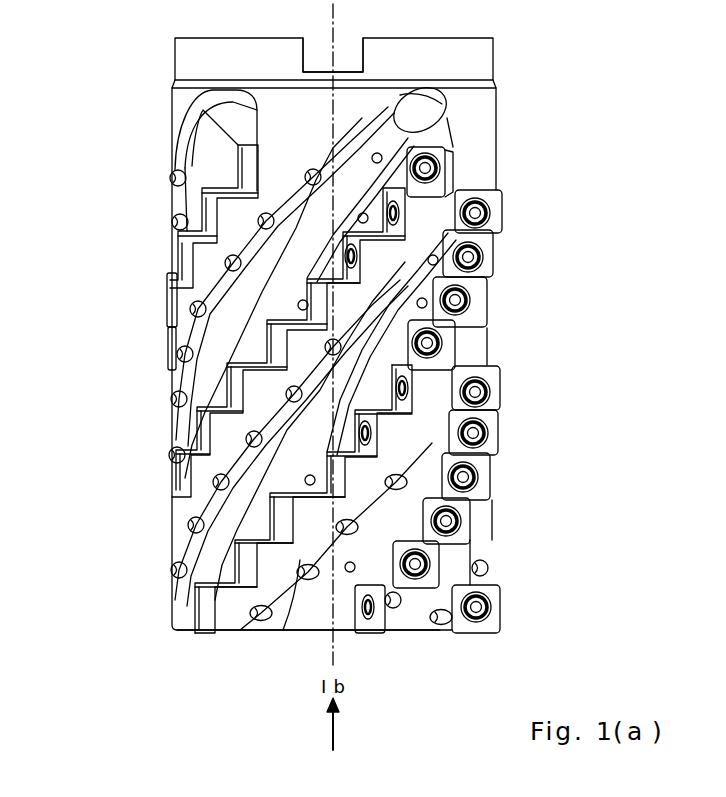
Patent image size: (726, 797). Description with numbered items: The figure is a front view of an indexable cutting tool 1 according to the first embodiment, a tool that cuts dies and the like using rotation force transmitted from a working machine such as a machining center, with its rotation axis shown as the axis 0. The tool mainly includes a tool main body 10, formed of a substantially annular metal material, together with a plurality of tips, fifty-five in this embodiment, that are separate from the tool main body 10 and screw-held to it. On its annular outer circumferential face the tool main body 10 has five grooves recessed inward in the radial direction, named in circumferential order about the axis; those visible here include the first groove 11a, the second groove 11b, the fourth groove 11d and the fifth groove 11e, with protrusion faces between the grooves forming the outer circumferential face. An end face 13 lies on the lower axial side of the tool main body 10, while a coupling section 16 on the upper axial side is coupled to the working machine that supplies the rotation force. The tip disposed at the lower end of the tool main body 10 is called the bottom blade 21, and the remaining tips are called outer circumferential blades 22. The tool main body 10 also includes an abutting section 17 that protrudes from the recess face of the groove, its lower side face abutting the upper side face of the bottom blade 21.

The axis 0 is at (333, 12).
The indexable cutting tool 1 is at (562, 58).
The tool main body 10 is at (497, 118).
The first groove 11a is at (217, 549).
The second groove 11b is at (322, 608).
The fourth groove 11d is at (185, 183).
The fifth groove 11e is at (196, 378).
The end face 13 is at (445, 633).
The coupling section 16 is at (405, 53).
The abutting section 17 is at (200, 578).
The bottom blade 21 is at (197, 615).
The outer circumferential blade 22 is at (286, 520).